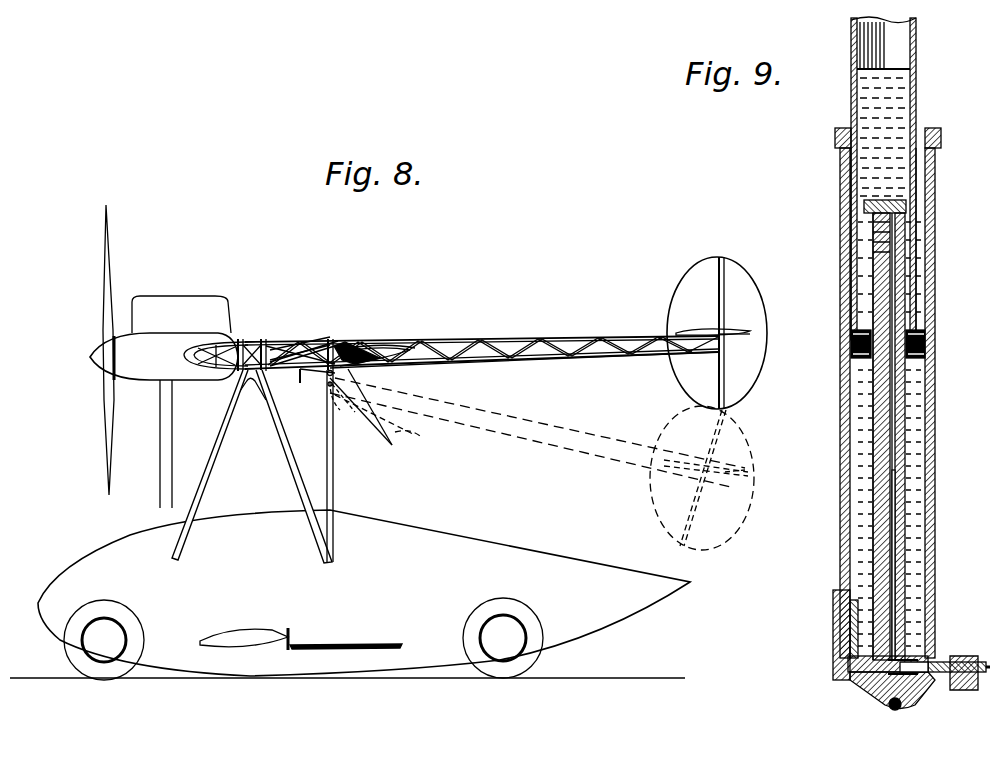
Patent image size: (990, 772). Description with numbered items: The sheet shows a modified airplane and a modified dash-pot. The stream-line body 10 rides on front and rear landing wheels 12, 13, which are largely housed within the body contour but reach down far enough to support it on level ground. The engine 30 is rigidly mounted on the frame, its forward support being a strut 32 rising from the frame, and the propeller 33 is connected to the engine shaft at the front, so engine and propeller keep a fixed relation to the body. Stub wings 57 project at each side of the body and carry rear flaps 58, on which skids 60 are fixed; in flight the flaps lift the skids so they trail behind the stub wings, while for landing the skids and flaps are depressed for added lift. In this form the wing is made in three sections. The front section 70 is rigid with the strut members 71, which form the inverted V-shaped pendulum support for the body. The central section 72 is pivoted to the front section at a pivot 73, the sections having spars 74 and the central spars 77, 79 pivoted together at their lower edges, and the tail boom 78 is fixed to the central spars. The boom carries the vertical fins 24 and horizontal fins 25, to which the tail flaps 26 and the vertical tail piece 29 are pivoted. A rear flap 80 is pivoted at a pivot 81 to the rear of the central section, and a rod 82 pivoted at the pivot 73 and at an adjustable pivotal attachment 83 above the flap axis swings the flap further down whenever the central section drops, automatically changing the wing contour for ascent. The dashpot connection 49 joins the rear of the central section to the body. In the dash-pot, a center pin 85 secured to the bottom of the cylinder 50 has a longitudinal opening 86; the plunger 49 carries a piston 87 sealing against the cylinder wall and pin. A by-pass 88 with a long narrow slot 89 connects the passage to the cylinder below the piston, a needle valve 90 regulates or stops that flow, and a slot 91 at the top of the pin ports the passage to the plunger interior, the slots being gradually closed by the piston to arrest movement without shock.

In FIG. 8, the body of an airplane 10 is at (472, 536).
In FIG. 8, the landing wheel 12 is at (100, 676).
In FIG. 8, the landing wheel 13 is at (543, 642).
In FIG. 8, the vertical fin 24 is at (685, 285).
In FIG. 8, the horizontal fin 25 is at (692, 330).
In FIG. 8, the tail flap 26 is at (737, 330).
In FIG. 8, the vertical tail piece 29 is at (758, 288).
In FIG. 8, the engine 30 is at (143, 380).
In FIG. 8, the strut 32 is at (159, 462).
In FIG. 8, the propeller 33 is at (111, 258).
In FIG. 8, the dashpot connection / plunger 49 is at (334, 458).
In FIG. 9, the dashpot connection / plunger 49 is at (851, 44).
In FIG. 9, the cylinder 50 is at (935, 450).
In FIG. 8, the stub wing 57 is at (225, 636).
In FIG. 8, the rear flap 58 is at (289, 636).
In FIG. 8, the skid 60 is at (345, 645).
In FIG. 8, the front section 70 is at (241, 339).
In FIG. 8, the strut member 71 is at (272, 447).
In FIG. 8, the central section 72 is at (312, 345).
In FIG. 8, the pivot 73 is at (256, 388).
In FIG. 8, the spar 74 is at (264, 339).
In FIG. 8, the spar 77 is at (282, 340).
In FIG. 8, the tail boom 78 is at (484, 337).
In FIG. 8, the spar 79 is at (331, 339).
In FIG. 8, the rear flap 80 is at (380, 347).
In FIG. 8, the pivot 81 is at (345, 382).
In FIG. 8, the rod 82 is at (300, 381).
In FIG. 8, the pivotal attachment 83 is at (340, 343).
In FIG. 9, the center pin 85 is at (878, 522).
In FIG. 9, the longitudinal opening 86 is at (893, 494).
In FIG. 9, the piston 87 is at (935, 349).
In FIG. 9, the by-pass 88 is at (858, 690).
In FIG. 9, the slot 89 is at (840, 640).
In FIG. 9, the needle valve 90 is at (918, 682).
In FIG. 9, the slot 91 is at (870, 240).